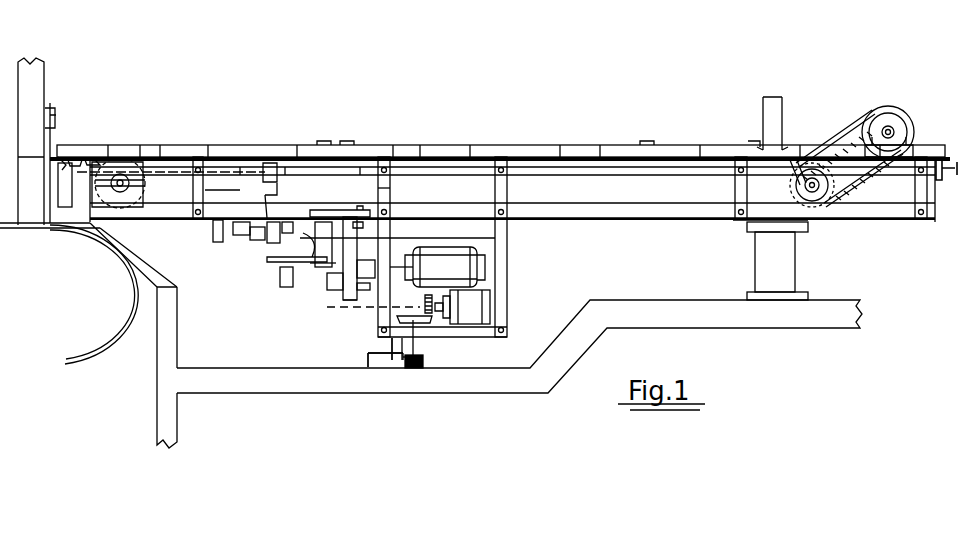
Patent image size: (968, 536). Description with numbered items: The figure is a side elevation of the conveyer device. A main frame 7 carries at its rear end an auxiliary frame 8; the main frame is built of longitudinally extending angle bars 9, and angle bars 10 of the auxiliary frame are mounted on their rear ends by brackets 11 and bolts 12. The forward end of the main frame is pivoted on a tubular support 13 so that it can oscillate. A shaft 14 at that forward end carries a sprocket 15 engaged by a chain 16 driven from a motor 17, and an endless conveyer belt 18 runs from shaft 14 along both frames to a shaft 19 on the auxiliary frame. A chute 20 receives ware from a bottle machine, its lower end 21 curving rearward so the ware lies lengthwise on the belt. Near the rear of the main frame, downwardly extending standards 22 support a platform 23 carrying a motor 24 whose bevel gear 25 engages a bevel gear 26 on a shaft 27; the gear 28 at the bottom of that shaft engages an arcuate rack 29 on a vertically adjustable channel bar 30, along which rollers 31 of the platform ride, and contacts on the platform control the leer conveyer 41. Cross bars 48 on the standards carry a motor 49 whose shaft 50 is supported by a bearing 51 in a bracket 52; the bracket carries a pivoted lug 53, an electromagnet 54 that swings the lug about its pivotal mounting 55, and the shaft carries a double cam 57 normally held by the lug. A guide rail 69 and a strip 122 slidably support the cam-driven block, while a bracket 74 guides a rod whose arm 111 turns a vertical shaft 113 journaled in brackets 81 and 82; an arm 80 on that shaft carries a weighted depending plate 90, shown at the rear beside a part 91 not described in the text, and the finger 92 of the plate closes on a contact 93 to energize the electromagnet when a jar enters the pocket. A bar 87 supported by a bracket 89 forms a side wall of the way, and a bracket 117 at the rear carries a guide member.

The main frame 7 is at (592, 167).
The auxiliary frame 8 is at (250, 165).
The angle bars 9 is at (368, 167).
The angle bars 10 is at (288, 165).
The brackets 11 is at (345, 150).
The bolts 12 is at (307, 148).
The tubular support 13 is at (785, 258).
The shaft 14 is at (811, 183).
The sprocket 15 is at (833, 177).
The chain 16 is at (850, 150).
The motor 17 is at (892, 115).
The endless conveyer belt 18 is at (795, 160).
The shaft 19 is at (123, 178).
The chute 20 is at (770, 115).
The lower end of chute 21 is at (752, 143).
The standards 22 is at (403, 238).
The platform 23 is at (445, 333).
The motor 24 is at (472, 307).
The bevel gear 25 is at (425, 345).
The bevel gear 26 is at (390, 343).
The shaft 27 is at (410, 358).
The gear 28 is at (416, 368).
The arcuate rack 29 is at (400, 357).
The channel bar 30 is at (372, 360).
The rollers 31 is at (395, 350).
The leer conveyer 41 is at (92, 358).
The cross bars 48 is at (468, 240).
The motor 49 is at (440, 267).
The shaft 50 is at (420, 262).
The bearing 51 is at (383, 188).
The bracket 52 is at (353, 222).
The lug 53 is at (395, 317).
The electromagnet 54 is at (370, 275).
The pivotal mounting 55 is at (352, 288).
The double cam 57 is at (315, 262).
The guide rail 69 is at (232, 243).
The bracket 74 is at (288, 288).
The arm 80 is at (168, 172).
The bracket 81 is at (260, 190).
The bracket 82 is at (270, 240).
The bar 87 is at (226, 145).
The bracket 89 is at (650, 152).
The depending plates 90 is at (65, 187).
The bracket 91 is at (60, 177).
The finger 92 is at (61, 166).
The contact 93 is at (76, 157).
The arm 111 is at (327, 278).
The vertical shaft 113 is at (265, 195).
The bracket 117 is at (88, 150).
The strip 122 is at (252, 238).